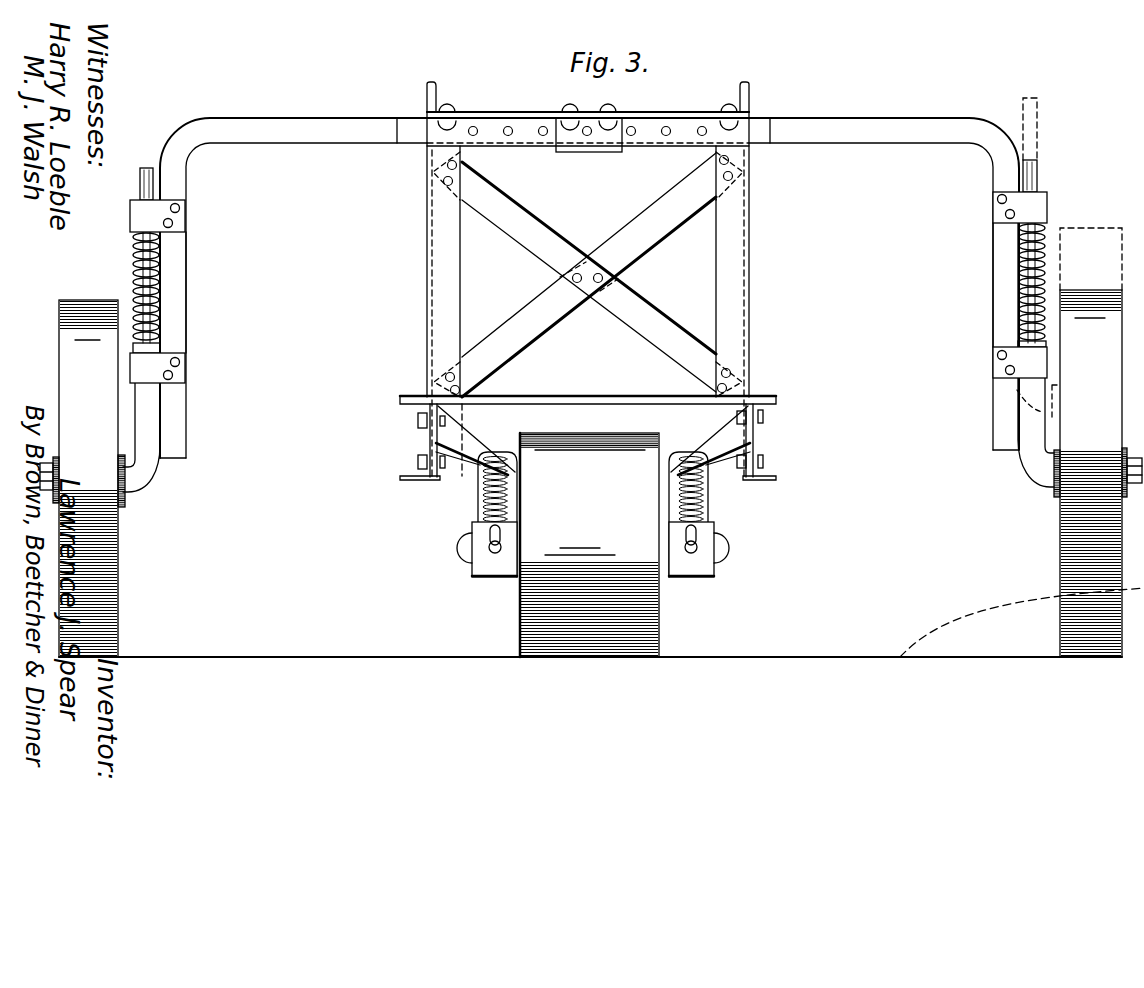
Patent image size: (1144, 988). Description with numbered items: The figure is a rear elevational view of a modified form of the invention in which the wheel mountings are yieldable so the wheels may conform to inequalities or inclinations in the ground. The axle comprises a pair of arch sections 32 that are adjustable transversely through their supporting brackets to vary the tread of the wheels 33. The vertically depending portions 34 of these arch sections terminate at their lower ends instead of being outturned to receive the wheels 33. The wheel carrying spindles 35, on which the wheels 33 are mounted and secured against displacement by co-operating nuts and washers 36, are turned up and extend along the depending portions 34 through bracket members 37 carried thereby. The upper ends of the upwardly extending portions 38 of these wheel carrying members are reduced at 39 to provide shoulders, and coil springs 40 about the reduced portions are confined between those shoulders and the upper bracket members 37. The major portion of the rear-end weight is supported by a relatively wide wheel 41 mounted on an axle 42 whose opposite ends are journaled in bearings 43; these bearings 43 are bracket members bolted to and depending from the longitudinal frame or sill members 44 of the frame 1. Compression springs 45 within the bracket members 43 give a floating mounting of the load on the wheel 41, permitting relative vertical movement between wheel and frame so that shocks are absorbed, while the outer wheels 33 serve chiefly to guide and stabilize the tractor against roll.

The frame 1 is at (760, 382).
The arch sections 32 is at (290, 126).
The wheels 33 is at (100, 537).
The vertically depending portions 34 is at (178, 284).
The wheel carrying spindles 35 is at (130, 478).
The nuts and washers 36 is at (48, 468).
The bracket members 37 is at (150, 210).
The upwardly extending portions 38 is at (152, 436).
The reduced portions 39 is at (165, 343).
The coil springs 40 is at (160, 252).
The relatively wide wheel 41 is at (532, 622).
The axle 42 is at (508, 577).
The bearings 43 is at (471, 568).
The longitudinal frame or sill members 44 is at (420, 440).
The compression springs 45 is at (478, 498).